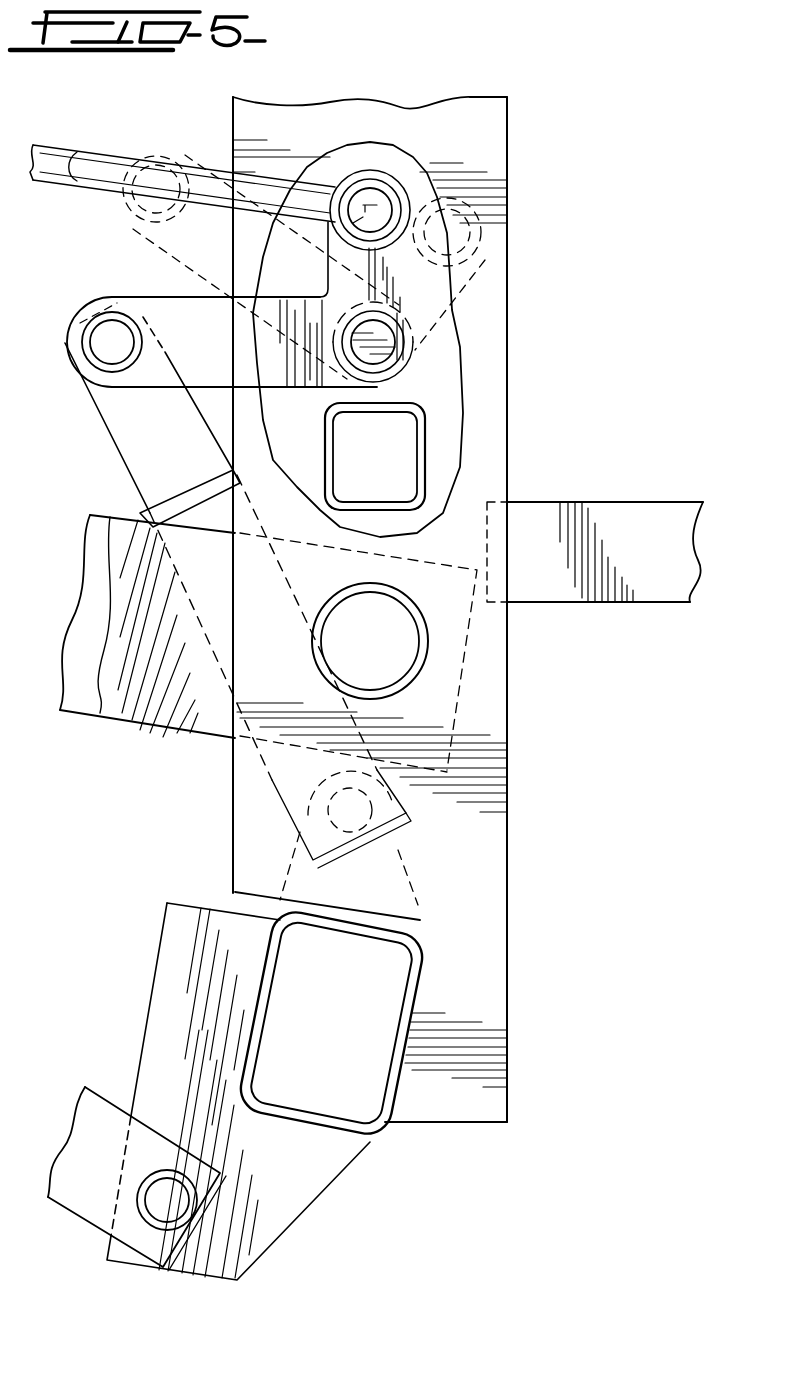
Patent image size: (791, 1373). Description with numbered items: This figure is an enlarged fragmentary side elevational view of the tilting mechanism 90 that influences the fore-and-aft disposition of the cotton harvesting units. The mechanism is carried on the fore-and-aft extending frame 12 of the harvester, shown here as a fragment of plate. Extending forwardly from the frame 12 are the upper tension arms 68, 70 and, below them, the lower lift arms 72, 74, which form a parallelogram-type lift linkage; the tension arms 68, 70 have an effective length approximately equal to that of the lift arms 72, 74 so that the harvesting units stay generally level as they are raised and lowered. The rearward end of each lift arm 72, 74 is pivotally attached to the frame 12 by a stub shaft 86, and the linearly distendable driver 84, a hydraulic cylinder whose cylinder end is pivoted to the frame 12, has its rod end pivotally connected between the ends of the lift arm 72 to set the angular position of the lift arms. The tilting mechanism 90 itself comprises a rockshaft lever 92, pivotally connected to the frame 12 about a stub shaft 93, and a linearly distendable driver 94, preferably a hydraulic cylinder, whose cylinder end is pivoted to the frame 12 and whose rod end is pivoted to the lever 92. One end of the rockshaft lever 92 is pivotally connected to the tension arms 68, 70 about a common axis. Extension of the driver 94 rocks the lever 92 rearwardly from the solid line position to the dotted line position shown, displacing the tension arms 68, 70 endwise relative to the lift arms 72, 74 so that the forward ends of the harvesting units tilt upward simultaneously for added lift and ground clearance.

The frame 12 is at (470, 882).
The upper tension arm 68 is at (100, 168).
The upper tension arm 70 is at (45, 150).
The lower lift arm 72 is at (127, 700).
The lower lift arm 74 is at (77, 700).
The linearly distendable driver 84 is at (83, 1193).
The stub shaft 86 is at (417, 667).
The tilting mechanism 90 is at (106, 452).
The rockshaft lever 92 is at (152, 370).
The stub shaft 93 is at (405, 372).
The linearly distendable driver 94 is at (265, 790).